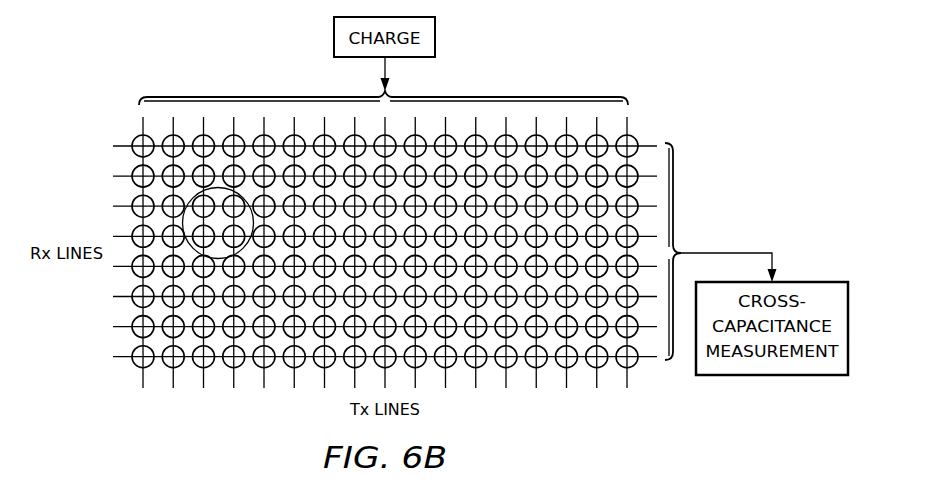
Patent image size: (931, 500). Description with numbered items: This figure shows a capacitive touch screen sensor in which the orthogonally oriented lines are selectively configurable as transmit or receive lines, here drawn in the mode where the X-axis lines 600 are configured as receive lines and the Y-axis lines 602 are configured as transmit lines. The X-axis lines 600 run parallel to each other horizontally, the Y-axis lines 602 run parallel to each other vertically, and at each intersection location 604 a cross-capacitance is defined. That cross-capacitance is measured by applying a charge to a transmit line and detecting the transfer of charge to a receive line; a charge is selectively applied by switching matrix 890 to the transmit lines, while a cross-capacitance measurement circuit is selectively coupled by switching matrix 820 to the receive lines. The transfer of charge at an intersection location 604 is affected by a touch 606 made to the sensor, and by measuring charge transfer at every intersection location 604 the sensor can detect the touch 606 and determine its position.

The X-axis lines 600 is at (347, 288).
The Y-axis lines 602 is at (218, 397).
The intersection location 604 is at (628, 367).
The touch 606 is at (188, 206).
The switching matrix 820 is at (676, 196).
The switching matrix 890 is at (218, 97).